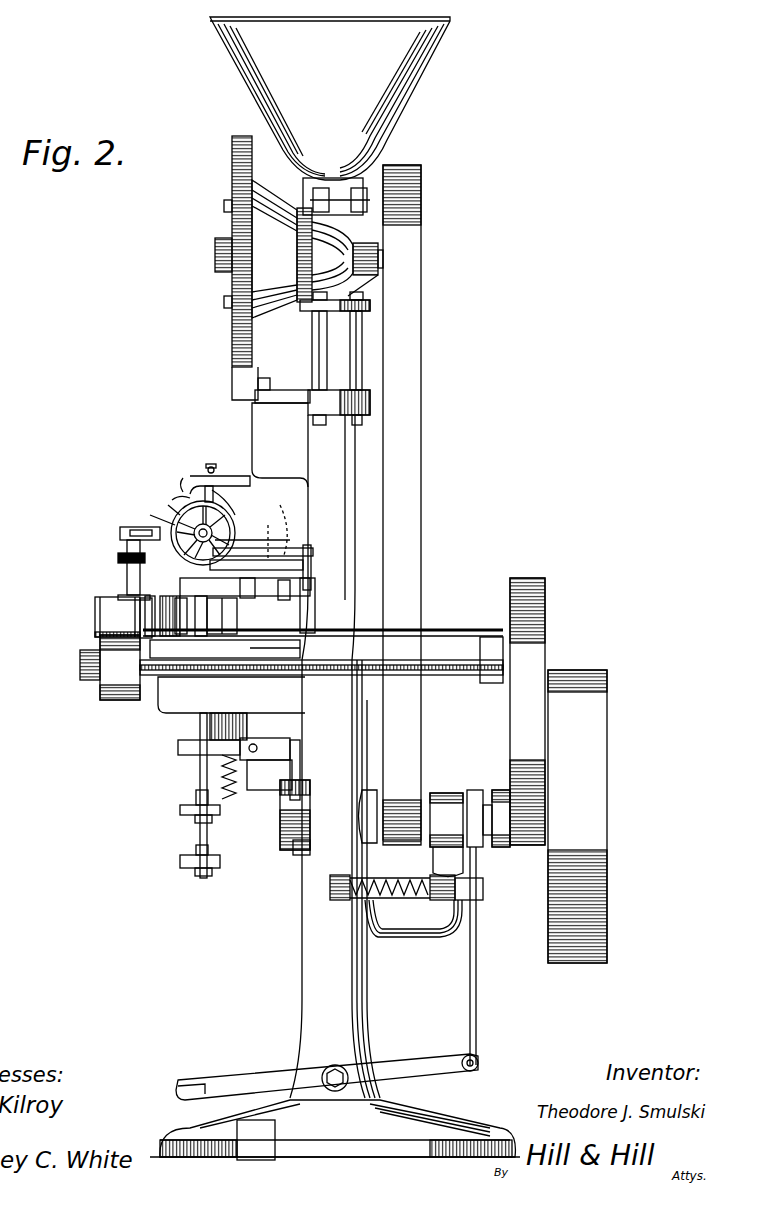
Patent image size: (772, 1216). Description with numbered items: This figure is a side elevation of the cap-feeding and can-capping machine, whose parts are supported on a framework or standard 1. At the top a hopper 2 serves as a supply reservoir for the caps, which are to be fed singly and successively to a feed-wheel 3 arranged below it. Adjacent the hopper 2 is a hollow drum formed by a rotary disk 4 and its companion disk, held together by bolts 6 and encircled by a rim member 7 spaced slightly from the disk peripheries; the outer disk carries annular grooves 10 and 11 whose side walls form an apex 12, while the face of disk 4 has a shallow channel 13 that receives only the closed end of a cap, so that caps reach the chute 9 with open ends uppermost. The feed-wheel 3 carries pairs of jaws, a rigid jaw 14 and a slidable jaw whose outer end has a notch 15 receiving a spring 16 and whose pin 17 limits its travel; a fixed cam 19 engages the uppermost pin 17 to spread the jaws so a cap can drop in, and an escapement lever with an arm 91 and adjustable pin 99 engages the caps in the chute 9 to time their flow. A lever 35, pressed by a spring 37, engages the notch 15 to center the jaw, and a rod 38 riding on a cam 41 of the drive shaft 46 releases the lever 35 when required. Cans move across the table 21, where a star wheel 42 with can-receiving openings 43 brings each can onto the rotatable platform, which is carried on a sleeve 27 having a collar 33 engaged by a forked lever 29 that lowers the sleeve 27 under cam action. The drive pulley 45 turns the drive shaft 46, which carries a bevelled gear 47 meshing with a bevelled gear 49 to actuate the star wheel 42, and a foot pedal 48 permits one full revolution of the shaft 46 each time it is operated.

The framework or standard 1 is at (308, 948).
The hopper 2 is at (400, 110).
The feed-wheel 3 is at (200, 927).
The rotary disk 4 is at (262, 205).
The bolts 6 is at (224, 206).
The rim member 7 is at (232, 280).
The chute 9 is at (250, 466).
The annular groove 10 is at (212, 530).
The annular groove 11 is at (194, 480).
The apex 12 is at (300, 748).
The channel or groove 13 is at (155, 528).
The jaw 14 is at (180, 500).
The notch 15 is at (128, 572).
The spring 16 is at (127, 548).
The pin 17 is at (176, 512).
The cam 19 is at (230, 488).
The table 21 is at (226, 640).
The sleeve 27 is at (198, 730).
The lever 29 is at (220, 775).
The collar 33 is at (210, 757).
The lever 35 is at (180, 582).
The spring 37 is at (256, 541).
The rod 38 is at (315, 575).
The cam 41 is at (293, 848).
The star wheel 42 is at (182, 600).
The can-receiving openings 43 is at (221, 616).
The drive pulley 45 is at (600, 805).
The drive shaft 46 is at (425, 798).
The bevelled gear 47 is at (282, 824).
The foot pedal 48 is at (230, 1082).
The bevelled gear 49 is at (211, 833).
The arm 91 is at (209, 486).
The adjustable pin 99 is at (214, 466).